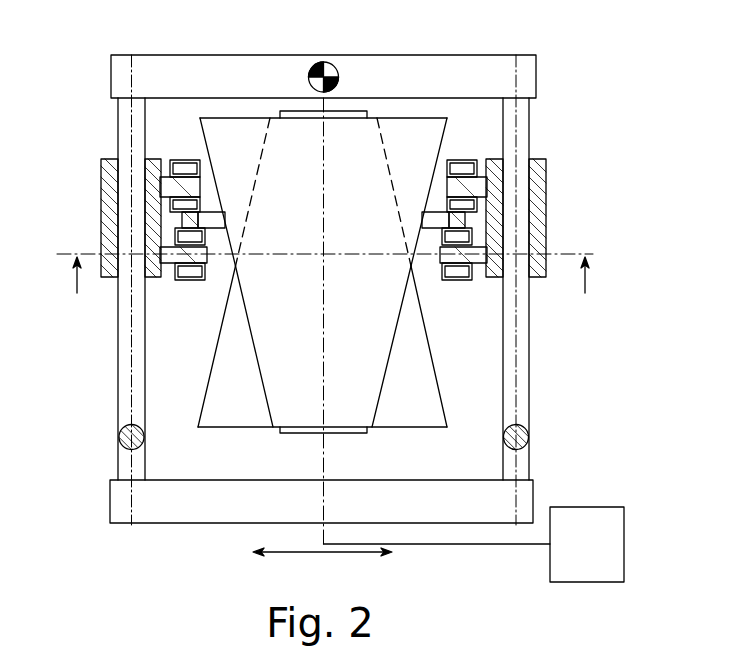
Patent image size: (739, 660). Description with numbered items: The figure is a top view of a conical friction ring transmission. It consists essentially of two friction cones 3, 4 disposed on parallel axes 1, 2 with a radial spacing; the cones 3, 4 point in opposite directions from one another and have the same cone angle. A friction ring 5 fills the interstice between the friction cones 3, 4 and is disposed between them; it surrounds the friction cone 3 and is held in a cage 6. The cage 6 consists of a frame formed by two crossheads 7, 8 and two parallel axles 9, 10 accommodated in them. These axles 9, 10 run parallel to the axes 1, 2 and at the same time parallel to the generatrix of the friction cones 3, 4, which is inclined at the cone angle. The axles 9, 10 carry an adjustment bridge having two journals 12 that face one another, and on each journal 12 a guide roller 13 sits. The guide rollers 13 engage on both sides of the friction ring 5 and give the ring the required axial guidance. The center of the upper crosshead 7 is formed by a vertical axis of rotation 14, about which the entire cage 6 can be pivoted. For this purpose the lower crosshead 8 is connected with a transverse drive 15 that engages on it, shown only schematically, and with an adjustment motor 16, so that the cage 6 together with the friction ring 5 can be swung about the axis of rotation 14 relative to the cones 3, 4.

The axis 1 is at (324, 453).
The axis 2 is at (325, 285).
The friction cone 3 is at (418, 140).
The friction cone 4 is at (418, 355).
The friction ring 5 is at (470, 225).
The cage 6 is at (552, 76).
The crosshead 7 is at (122, 74).
The lower crosshead 8 is at (178, 510).
The axle 9 is at (118, 343).
The axle 10 is at (520, 385).
The journal 12 is at (473, 267).
The guide roller 13 is at (473, 158).
The vertical axis of rotation 14 is at (330, 67).
The transverse drive 15 is at (490, 546).
The adjustment motor 16 is at (615, 537).